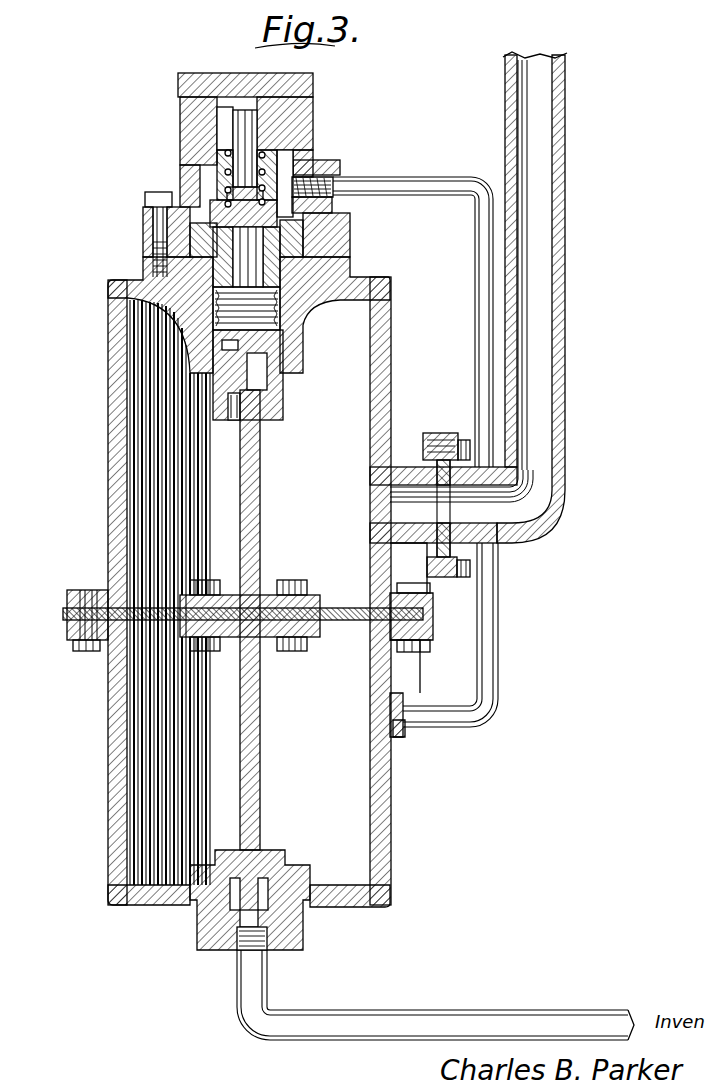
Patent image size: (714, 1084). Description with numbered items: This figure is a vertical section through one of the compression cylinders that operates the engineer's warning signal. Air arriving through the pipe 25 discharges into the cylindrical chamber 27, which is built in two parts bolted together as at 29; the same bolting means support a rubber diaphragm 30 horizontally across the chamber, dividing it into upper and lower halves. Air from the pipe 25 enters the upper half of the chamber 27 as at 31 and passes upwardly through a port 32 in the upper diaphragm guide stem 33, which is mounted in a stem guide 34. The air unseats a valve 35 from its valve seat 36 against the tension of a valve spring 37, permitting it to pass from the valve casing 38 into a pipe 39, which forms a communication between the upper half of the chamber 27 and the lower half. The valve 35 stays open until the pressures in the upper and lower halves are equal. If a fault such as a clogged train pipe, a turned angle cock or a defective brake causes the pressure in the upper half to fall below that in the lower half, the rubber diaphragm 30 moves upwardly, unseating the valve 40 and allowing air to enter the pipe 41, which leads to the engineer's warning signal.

The pipe 25 is at (567, 270).
The cylindrical chamber 27 is at (108, 425).
The bolts 29 is at (67, 630).
The rubber diaphragm 30 is at (351, 622).
The air inlet 31 is at (441, 434).
The port 32 is at (234, 420).
The upper diaphragm guide stem 33 is at (259, 468).
The stem guide 34 is at (285, 401).
The valve 35 is at (345, 212).
The valve seat 36 is at (307, 238).
The valve spring 37 is at (254, 198).
The valve casing 38 is at (180, 158).
The pipe 39 is at (398, 183).
The valve 40 is at (283, 856).
The pipe 41 is at (343, 1010).